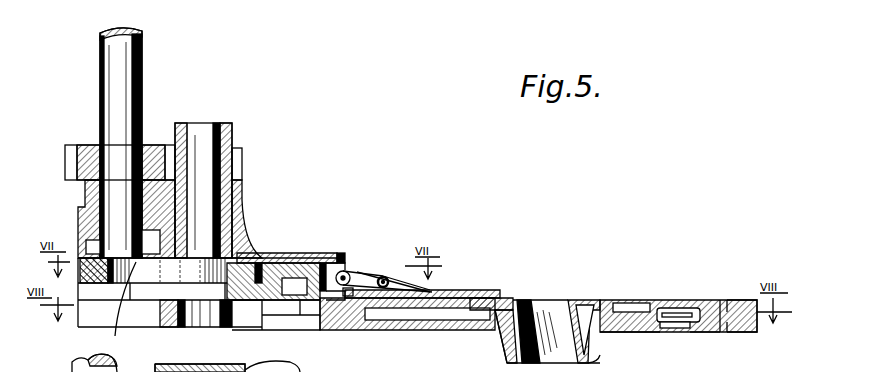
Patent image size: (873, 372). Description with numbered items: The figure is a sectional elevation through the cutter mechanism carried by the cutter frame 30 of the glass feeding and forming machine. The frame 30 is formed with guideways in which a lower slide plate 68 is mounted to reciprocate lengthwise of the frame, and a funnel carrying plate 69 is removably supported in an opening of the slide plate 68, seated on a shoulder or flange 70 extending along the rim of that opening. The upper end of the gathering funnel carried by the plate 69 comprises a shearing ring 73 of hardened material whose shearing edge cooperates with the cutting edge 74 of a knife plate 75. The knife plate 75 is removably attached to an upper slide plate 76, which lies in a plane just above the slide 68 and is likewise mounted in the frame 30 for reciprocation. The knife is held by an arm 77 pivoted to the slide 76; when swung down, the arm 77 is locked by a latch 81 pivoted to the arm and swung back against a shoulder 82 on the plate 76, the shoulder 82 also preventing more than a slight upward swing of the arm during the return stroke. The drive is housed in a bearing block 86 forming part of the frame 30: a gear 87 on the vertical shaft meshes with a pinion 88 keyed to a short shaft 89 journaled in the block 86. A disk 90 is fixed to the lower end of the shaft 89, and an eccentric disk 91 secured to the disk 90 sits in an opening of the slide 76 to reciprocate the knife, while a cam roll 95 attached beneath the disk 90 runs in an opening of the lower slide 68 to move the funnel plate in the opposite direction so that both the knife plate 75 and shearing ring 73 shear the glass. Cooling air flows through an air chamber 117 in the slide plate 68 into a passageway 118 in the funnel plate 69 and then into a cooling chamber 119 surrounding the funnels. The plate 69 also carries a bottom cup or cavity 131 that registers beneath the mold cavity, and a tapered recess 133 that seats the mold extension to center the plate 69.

The cutter frame 30 is at (743, 333).
The slide plate 68 is at (733, 291).
The funnel carrying plate 69 is at (634, 333).
The shoulder or flange 70 is at (699, 333).
The shearing ring 73 is at (574, 300).
The cutting edge 74 is at (512, 300).
The knife plate 75 is at (458, 290).
The slide plate 76 is at (284, 255).
The arm 77 is at (350, 270).
The latch 81 is at (374, 280).
The shoulder 82 is at (379, 276).
The bearing block 86 is at (128, 80).
The gear 87 is at (86, 148).
The pinion 88 is at (242, 163).
The short shaft 89 is at (204, 130).
The disk 90 is at (276, 315).
The eccentric disk 91 is at (125, 305).
The cam roll 95 is at (202, 327).
The air chamber 117 is at (461, 326).
The air passage 118 is at (670, 333).
The cooling chamber 119 is at (506, 340).
The bottom cup or cavity 131 is at (626, 303).
The recess 133 is at (668, 308).